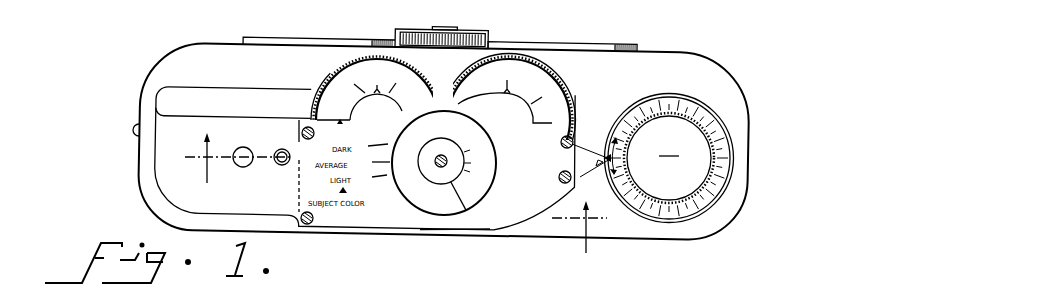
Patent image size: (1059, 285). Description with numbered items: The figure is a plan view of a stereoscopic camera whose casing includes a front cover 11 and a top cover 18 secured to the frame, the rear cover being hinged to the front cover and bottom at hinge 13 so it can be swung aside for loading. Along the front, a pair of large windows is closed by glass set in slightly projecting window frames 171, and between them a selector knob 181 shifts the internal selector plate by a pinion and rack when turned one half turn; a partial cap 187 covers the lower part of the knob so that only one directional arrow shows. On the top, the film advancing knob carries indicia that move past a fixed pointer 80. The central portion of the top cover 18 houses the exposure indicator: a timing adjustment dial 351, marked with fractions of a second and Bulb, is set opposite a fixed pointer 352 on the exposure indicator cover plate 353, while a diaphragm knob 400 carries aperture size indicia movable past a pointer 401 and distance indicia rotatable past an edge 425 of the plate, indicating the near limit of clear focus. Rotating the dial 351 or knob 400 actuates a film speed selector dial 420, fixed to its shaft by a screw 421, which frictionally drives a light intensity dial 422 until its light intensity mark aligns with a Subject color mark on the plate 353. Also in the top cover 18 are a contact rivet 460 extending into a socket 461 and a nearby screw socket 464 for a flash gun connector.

The top cover 18 is at (728, 73).
The hinge 13 is at (134, 137).
The window frames 171 is at (282, 40).
The partial cap 187 is at (440, 26).
The selector knob 181 is at (460, 32).
The front cover 11 is at (397, 197).
The diaphragm knob 400 is at (349, 120).
The edge of the plate 425 is at (312, 110).
The pointer 401 is at (402, 97).
The contact rivet 460 is at (275, 149).
The screw socket 464 is at (240, 166).
The socket 461 is at (275, 167).
The timing adjustment dial 351 is at (525, 120).
The fixed pointer 352 is at (480, 95).
The exposure indicator cover plate 353 is at (437, 224).
The film speed selector dial 420 is at (459, 169).
The screw 421 is at (438, 161).
The light intensity dial 422 is at (472, 200).
The fixed pointer 80 is at (595, 160).